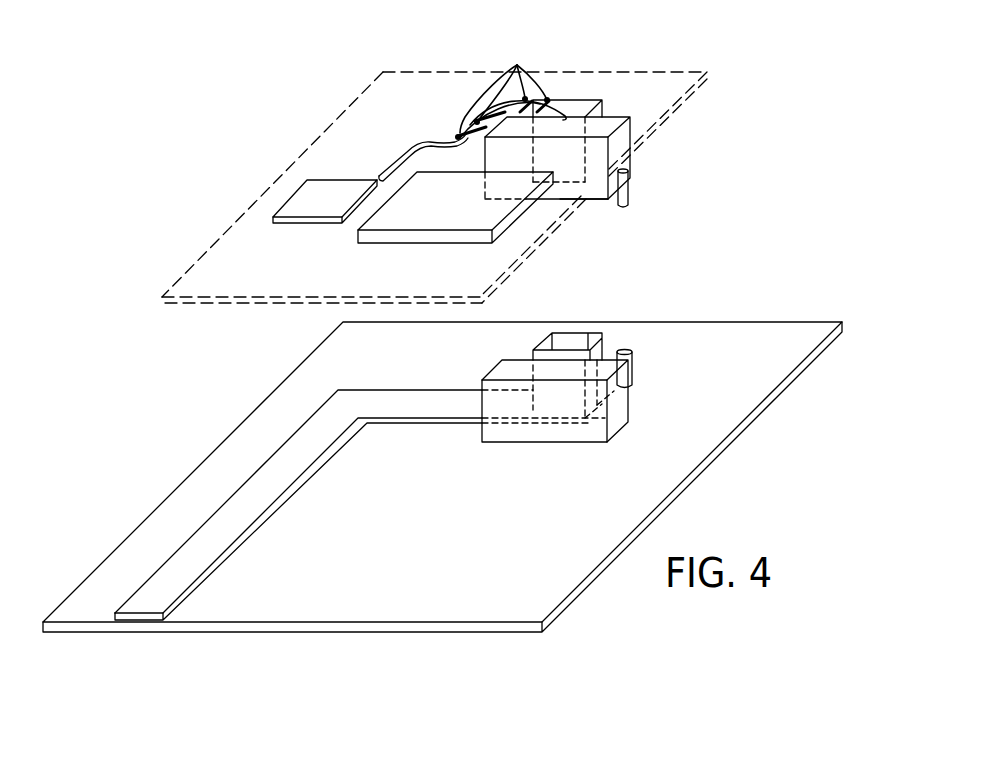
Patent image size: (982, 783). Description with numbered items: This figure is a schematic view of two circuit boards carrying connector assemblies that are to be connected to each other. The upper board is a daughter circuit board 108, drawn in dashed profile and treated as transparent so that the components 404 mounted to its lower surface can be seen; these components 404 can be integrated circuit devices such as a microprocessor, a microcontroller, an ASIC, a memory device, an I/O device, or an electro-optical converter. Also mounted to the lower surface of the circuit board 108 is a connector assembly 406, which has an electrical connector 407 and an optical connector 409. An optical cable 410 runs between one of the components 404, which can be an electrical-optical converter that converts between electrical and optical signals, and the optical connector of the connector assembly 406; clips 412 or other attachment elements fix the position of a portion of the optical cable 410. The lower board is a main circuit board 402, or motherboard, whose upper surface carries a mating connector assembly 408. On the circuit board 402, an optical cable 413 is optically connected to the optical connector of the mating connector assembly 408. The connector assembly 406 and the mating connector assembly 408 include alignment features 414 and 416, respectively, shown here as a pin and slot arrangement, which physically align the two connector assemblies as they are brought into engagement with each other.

The circuit board 108 is at (444, 80).
The circuit board 402 is at (650, 500).
The components 404 is at (385, 223).
The connector assembly 406 is at (641, 156).
The electrical connector 407 is at (594, 200).
The mating connector assembly 408 is at (611, 341).
The optical connector 409 is at (575, 108).
The optical cable 410 is at (408, 154).
The clips 412 is at (517, 65).
The optical cable 413 is at (172, 596).
The alignment feature 414 is at (628, 194).
The alignment feature 416 is at (634, 362).